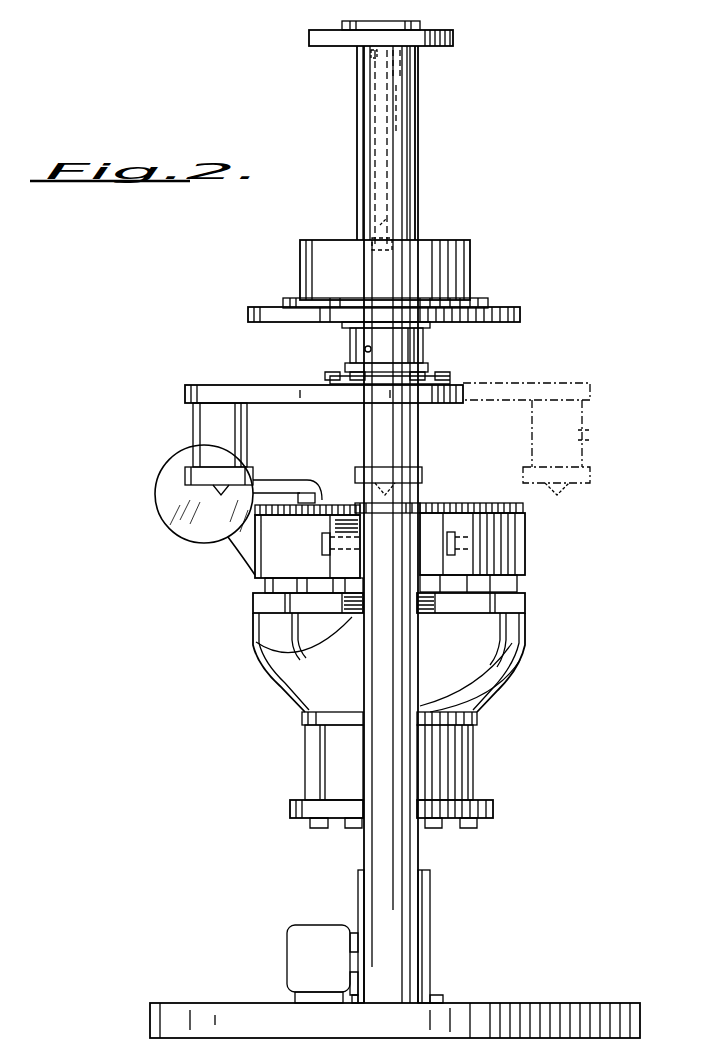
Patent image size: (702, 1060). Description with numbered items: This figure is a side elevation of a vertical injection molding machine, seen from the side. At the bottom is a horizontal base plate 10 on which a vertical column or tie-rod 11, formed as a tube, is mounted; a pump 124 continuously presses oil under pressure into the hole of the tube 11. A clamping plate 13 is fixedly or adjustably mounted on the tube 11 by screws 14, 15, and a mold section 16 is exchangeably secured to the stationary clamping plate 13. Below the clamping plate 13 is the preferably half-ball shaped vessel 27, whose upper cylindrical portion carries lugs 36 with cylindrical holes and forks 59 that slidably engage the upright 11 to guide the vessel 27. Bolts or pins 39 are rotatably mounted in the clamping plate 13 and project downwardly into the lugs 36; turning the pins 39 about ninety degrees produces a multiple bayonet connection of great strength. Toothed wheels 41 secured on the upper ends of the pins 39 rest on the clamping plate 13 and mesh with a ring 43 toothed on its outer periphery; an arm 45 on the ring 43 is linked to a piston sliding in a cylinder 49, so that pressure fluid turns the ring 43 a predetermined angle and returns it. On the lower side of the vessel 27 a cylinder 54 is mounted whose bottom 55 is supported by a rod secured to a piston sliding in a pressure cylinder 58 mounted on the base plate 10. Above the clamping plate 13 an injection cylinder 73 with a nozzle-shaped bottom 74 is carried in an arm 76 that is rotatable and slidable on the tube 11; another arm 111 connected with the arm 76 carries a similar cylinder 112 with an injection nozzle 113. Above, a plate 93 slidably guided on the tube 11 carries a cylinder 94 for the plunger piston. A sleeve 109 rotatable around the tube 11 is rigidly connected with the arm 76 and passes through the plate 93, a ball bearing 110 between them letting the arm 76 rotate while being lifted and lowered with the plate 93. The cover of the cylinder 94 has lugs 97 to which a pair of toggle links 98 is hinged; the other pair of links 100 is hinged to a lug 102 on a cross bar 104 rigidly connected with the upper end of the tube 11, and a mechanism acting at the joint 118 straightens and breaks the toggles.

The base plate 10 is at (552, 1003).
The column or tie-rod 11 is at (420, 853).
The clamping plate 13 is at (525, 545).
The screw 14 is at (457, 540).
The screw 15 is at (320, 553).
The mold section 16 is at (300, 612).
The vessel 27 is at (507, 672).
The lug 36 is at (343, 604).
The bolt or pin 39 is at (270, 585).
The toothed wheel 41 is at (308, 503).
The ring 43 is at (425, 507).
The arm 45 is at (295, 482).
The cylinder 49 is at (175, 515).
The cylinder 54 is at (478, 762).
The bottom 55 is at (478, 822).
The pressure cylinder 58 is at (430, 895).
The fork 59 is at (350, 616).
The injection cylinder 73 is at (592, 436).
The bottom 74 is at (422, 477).
The arm 76 is at (503, 383).
The plate 93 is at (522, 314).
The cylinder 94 is at (472, 290).
The lug 97 is at (385, 228).
The toggle link pair 98 is at (380, 176).
The toggle link pair 100 is at (372, 100).
The lug 102 is at (398, 80).
The cross bar 104 is at (440, 47).
The sleeve 109 is at (357, 350).
The ball bearing 110 is at (340, 297).
The arm 111 is at (250, 392).
The cylinder 112 is at (205, 422).
The injection nozzle 113 is at (190, 478).
The joint 118 is at (395, 138).
The pump 124 is at (300, 955).